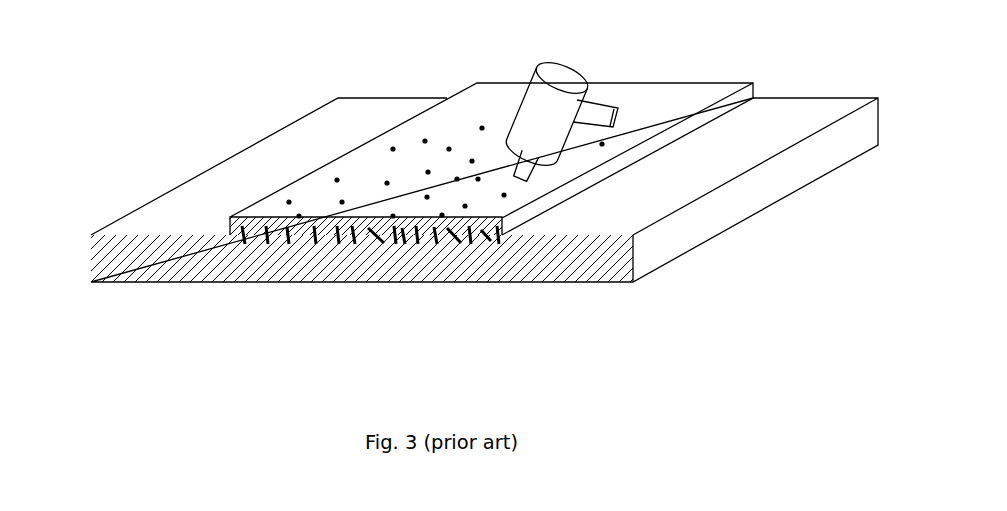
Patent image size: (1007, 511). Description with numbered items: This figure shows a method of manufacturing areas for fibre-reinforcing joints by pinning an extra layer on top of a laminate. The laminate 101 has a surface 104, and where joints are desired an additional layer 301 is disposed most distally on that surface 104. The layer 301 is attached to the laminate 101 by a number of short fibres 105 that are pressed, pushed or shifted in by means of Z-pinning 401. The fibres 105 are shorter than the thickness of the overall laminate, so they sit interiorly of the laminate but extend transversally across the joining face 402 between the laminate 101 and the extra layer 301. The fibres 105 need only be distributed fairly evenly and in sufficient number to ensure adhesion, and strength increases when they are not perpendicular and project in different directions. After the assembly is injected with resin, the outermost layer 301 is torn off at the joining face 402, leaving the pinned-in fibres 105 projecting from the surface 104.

The laminate 101 is at (202, 202).
The surface 104 is at (263, 163).
The fibres 105 is at (402, 235).
The additional layer 301 is at (718, 110).
The Z-pinning 401 is at (504, 194).
The joining face 402 is at (231, 236).